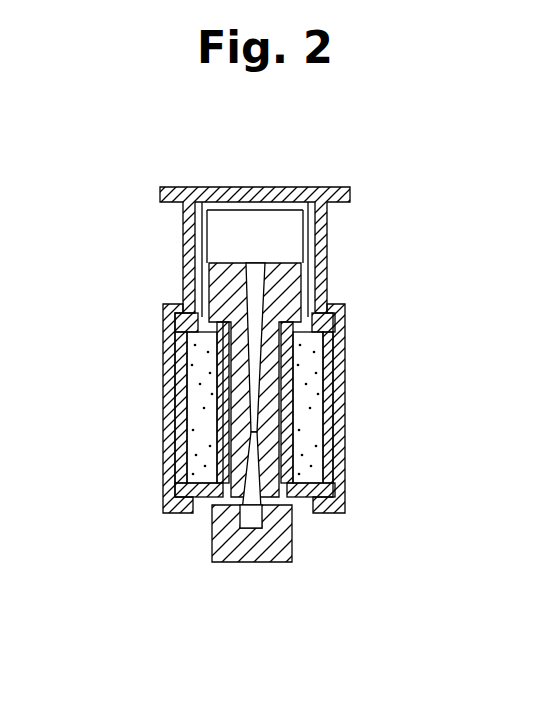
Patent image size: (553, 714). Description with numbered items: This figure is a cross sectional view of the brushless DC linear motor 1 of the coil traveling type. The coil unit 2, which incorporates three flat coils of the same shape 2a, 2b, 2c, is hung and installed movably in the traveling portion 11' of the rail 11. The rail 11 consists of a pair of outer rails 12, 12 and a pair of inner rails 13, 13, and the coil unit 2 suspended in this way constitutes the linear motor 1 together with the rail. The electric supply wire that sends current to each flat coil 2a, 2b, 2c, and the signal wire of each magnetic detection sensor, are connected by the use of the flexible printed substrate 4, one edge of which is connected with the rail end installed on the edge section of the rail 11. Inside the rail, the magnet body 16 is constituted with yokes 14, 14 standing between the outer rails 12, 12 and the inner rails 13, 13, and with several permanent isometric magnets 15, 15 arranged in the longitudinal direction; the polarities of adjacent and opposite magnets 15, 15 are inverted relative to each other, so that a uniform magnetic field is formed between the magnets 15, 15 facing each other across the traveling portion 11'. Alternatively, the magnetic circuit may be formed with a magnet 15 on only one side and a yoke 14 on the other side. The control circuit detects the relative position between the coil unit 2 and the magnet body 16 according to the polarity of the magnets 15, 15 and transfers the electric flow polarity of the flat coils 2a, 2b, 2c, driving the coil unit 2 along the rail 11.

The brushless DC linear motor 1 is at (143, 205).
The coil unit 2 is at (252, 562).
The flat coil 2a is at (374, 363).
The flat coil 2b is at (374, 363).
The flat coil 2c is at (268, 300).
The flexible printed substrate 4 is at (268, 187).
The rail 11 is at (305, 223).
The traveling portion 11' is at (153, 420).
The outer rail 12 is at (172, 450).
The inner rail 13 is at (198, 517).
The yoke 14 is at (200, 381).
The permanent isometric magnet 15 is at (188, 388).
The magnet body 16 is at (185, 338).